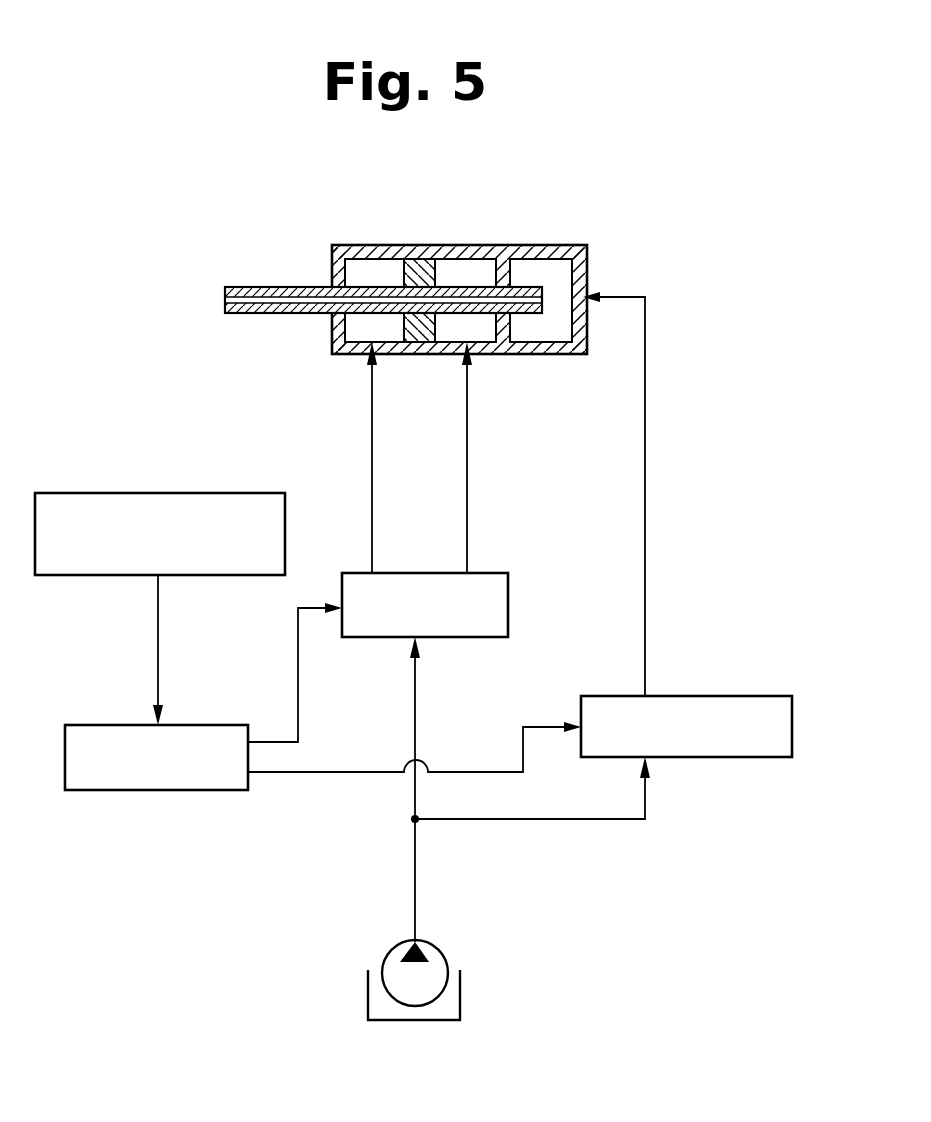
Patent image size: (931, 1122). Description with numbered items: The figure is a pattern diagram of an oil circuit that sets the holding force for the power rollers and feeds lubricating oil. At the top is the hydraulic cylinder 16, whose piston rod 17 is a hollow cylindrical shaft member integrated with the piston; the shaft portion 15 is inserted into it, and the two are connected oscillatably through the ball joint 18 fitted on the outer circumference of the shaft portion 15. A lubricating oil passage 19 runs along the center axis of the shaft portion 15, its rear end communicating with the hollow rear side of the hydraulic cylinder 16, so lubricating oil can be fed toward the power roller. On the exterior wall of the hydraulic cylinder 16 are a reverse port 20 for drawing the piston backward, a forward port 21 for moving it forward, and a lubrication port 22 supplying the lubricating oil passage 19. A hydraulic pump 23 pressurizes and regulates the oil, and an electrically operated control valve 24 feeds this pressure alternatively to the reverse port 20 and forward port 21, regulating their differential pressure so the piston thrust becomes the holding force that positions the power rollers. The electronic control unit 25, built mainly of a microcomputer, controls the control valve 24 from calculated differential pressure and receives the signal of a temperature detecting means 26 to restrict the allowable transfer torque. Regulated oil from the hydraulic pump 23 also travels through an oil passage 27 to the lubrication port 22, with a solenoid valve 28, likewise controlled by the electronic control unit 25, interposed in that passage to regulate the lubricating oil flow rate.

The shaft portion 15 is at (283, 313).
The hydraulic cylinder 16 is at (503, 245).
The piston rod 17 is at (555, 272).
The ball joint 18 is at (427, 246).
The lubricating oil passage 19 is at (258, 298).
The reverse port 20 is at (362, 355).
The forward port 21 is at (470, 355).
The lubrication port 22 is at (582, 305).
The hydraulic pump 23 is at (442, 955).
The control valve 24 is at (508, 573).
The electronic control unit 25 is at (115, 732).
The temperature detecting means 26 is at (148, 493).
The oil passage 27 is at (645, 803).
The solenoid valve 28 is at (752, 696).